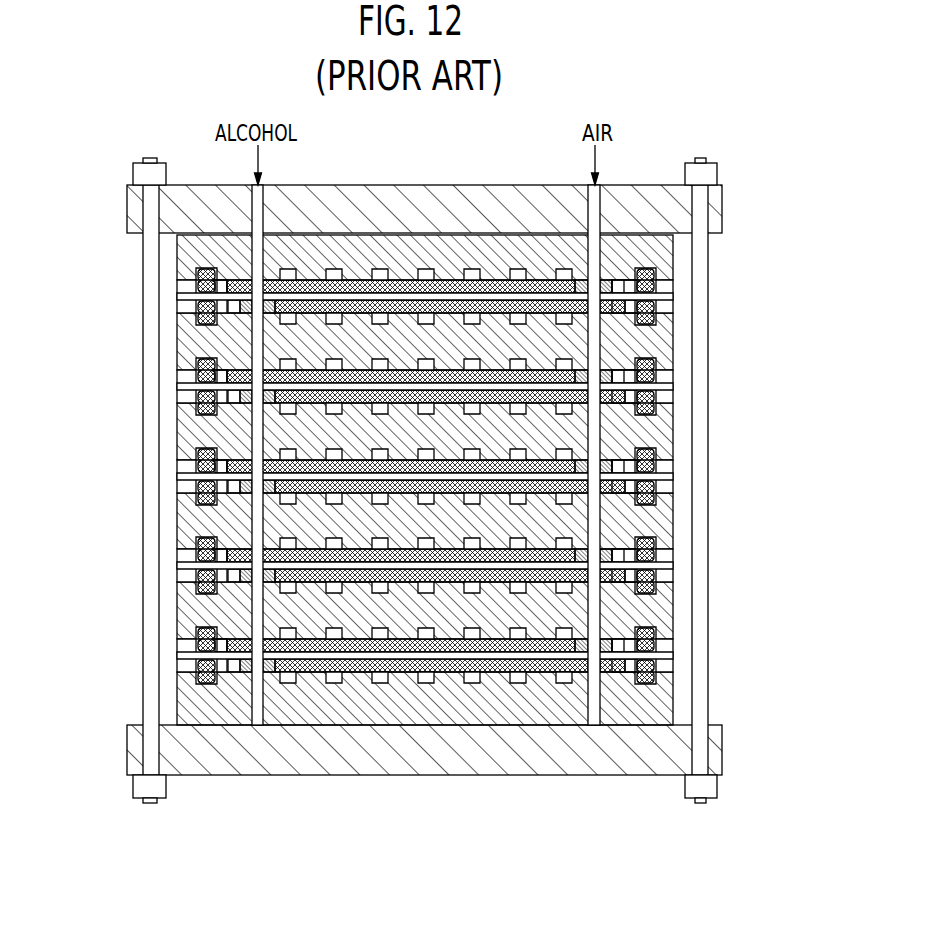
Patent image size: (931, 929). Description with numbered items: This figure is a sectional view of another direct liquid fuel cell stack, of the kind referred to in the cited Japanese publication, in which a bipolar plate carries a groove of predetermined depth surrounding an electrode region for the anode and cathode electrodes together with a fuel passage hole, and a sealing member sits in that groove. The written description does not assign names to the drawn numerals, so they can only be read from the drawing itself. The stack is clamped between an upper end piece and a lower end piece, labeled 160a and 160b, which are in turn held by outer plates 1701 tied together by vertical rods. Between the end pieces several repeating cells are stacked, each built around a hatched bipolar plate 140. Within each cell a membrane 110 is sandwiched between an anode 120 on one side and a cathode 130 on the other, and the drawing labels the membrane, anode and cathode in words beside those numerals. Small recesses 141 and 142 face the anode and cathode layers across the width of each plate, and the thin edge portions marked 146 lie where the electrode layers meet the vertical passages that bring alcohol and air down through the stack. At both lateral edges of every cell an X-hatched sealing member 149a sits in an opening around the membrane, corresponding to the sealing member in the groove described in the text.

The end plate 1701 is at (715, 213).
The upper end block 160a is at (668, 248).
The lower end block 160b is at (662, 698).
The bipolar plate 140 is at (655, 518).
The gasket 149a is at (197, 313).
The current collector 146 is at (320, 280).
The fuel flow channel 141 is at (377, 272).
The air flow channel 142 is at (468, 312).
The anode 120 is at (238, 460).
The membrane 110 is at (185, 477).
The cathode 130 is at (233, 488).